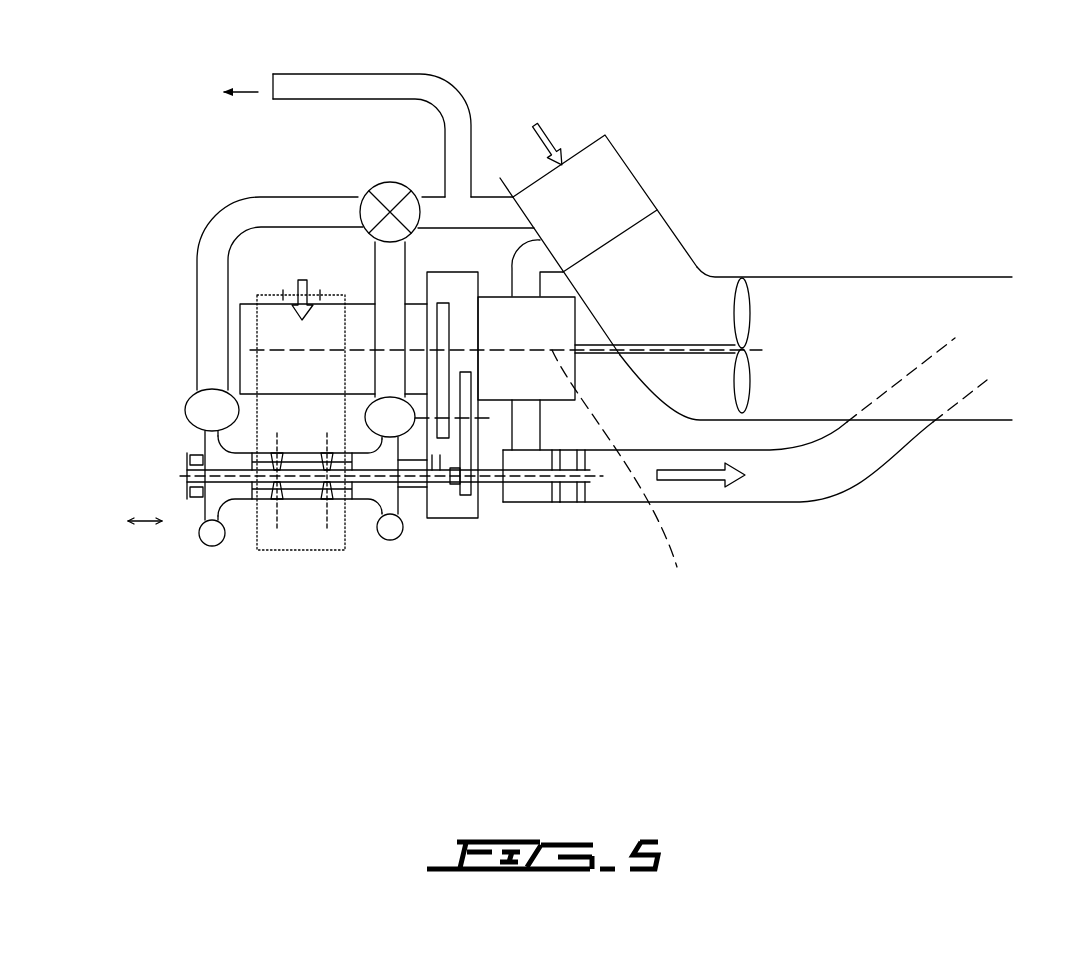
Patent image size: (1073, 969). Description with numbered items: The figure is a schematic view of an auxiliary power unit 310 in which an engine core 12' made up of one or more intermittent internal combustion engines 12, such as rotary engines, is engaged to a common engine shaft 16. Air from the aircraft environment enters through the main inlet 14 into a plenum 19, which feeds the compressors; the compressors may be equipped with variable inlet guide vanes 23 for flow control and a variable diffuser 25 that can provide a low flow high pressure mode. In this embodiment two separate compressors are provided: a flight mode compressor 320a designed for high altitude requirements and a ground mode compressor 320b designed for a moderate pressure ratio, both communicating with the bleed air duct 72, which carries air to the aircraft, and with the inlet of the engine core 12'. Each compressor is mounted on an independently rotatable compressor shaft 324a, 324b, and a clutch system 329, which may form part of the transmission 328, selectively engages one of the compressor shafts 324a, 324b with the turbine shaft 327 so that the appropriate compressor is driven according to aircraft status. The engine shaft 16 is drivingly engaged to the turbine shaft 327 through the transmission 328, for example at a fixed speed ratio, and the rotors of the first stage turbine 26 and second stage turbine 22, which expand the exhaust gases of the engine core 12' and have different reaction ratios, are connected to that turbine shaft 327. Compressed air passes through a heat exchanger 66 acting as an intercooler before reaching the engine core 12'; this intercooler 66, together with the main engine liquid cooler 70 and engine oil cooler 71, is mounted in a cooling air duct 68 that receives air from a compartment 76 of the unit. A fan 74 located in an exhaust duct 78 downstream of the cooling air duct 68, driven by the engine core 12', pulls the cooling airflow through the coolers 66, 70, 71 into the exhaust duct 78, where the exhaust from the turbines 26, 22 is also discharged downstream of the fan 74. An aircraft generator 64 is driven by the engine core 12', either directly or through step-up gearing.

The auxiliary power unit 310 is at (806, 98).
The bleed air duct 72 is at (316, 88).
The aircraft generator 64 is at (247, 372).
The main inlet 14 is at (292, 290).
The plenum 19 is at (318, 429).
The compressor shaft 324a is at (202, 457).
The compressor shaft 324b is at (413, 490).
The variable inlet guide vanes 23 is at (300, 544).
The flight mode compressor 320a is at (238, 492).
The ground mode compressor 320b is at (363, 492).
The variable diffuser 25 is at (212, 533).
The clutch system 329 is at (483, 448).
The transmission 328 is at (475, 500).
The intermittent internal combustion engine 12 is at (511, 208).
The engine core 12' is at (526, 348).
The engine shaft 16 is at (621, 480).
The second stage turbine 22 is at (583, 502).
The first stage turbine 26 is at (569, 570).
The turbine shaft 327 is at (525, 502).
The exhaust duct 78 is at (886, 354).
The heat exchanger 66 is at (598, 187).
The main engine liquid cooler 70 is at (598, 187).
The engine oil cooler 71 is at (612, 190).
The cooling air duct 68 is at (655, 252).
The compartment 76 is at (575, 114).
The fan 74 is at (742, 277).